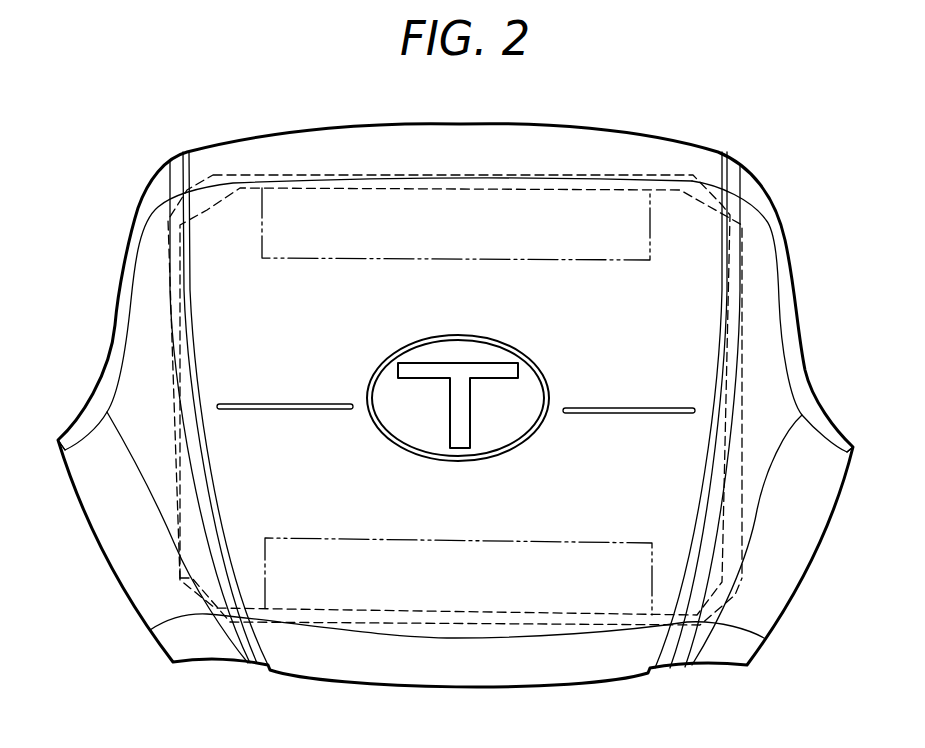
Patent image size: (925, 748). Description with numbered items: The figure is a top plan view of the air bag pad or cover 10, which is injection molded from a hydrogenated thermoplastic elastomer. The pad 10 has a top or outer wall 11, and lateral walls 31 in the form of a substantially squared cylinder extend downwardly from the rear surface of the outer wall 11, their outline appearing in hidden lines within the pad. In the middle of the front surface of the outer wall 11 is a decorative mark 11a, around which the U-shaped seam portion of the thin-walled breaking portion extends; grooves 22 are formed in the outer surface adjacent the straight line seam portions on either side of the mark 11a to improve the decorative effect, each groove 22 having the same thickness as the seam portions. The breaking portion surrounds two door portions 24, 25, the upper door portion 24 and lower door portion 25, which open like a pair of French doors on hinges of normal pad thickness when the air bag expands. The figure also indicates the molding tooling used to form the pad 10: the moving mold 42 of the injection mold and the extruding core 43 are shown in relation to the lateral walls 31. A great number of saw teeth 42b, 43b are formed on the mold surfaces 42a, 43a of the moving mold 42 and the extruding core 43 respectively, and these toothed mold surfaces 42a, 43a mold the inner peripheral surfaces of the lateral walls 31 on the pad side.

The pad 10 is at (767, 153).
The outer wall 11 is at (387, 290).
The decorative mark 11a is at (545, 362).
The grooves 22 is at (286, 410).
The door portion 24 is at (675, 258).
The door portion 25 is at (614, 530).
The lateral walls 31 is at (249, 178).
The moving mold 42 is at (210, 290).
The mold surface 42a is at (178, 362).
The saw teeth 42b is at (740, 378).
The extruding core 43 is at (290, 243).
The mold surface 43a is at (468, 188).
The saw teeth 43b is at (342, 613).